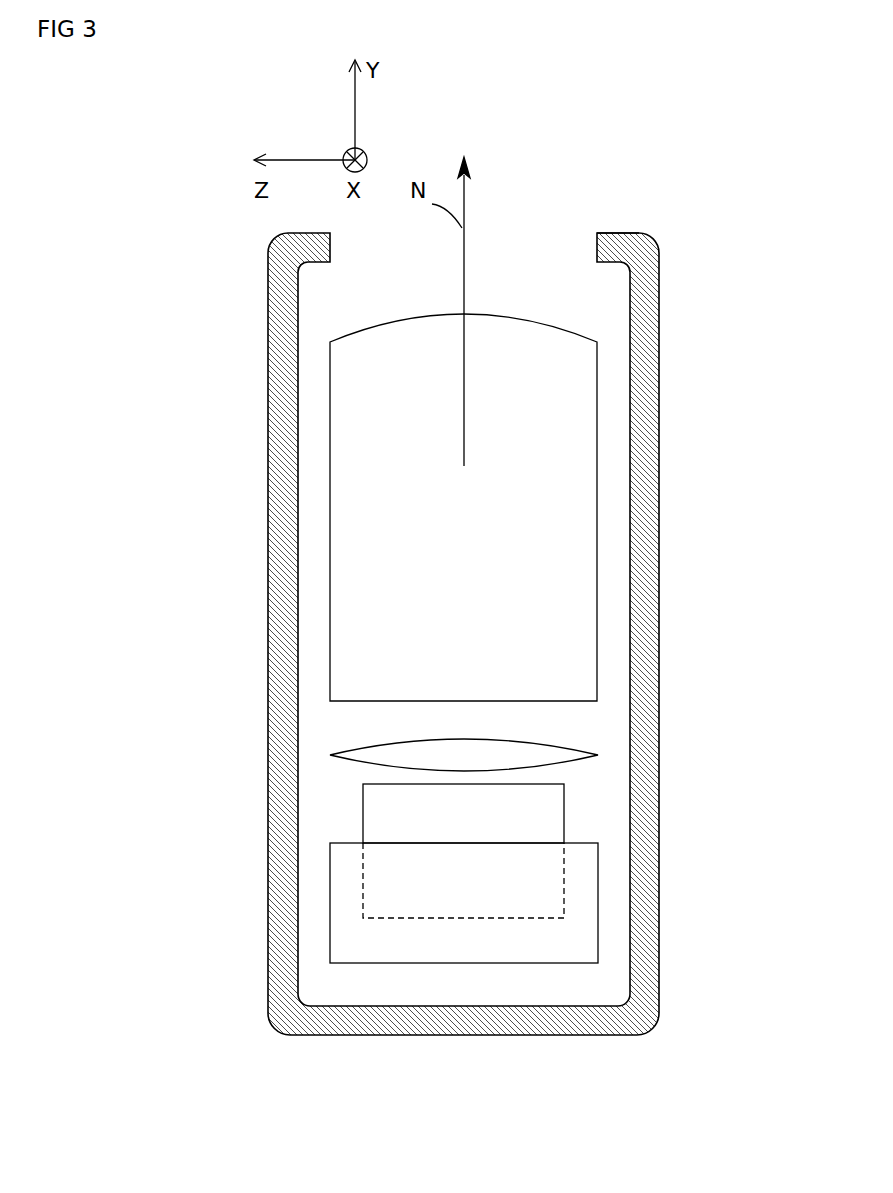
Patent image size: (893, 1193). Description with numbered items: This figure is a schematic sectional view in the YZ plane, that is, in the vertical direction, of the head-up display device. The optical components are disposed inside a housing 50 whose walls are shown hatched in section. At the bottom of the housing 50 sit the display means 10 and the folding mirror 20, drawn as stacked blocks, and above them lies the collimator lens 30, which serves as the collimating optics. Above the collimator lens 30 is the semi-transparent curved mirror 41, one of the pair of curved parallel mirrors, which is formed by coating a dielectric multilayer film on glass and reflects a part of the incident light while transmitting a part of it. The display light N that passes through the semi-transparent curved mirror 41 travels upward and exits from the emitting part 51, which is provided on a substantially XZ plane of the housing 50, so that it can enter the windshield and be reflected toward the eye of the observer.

The display means 10 is at (565, 815).
The folding mirror 20 is at (598, 899).
The collimator lens 30 is at (598, 753).
The semi-transparent curved mirror 41 is at (597, 537).
The housing 50 is at (268, 607).
The emitting part 51 is at (571, 240).